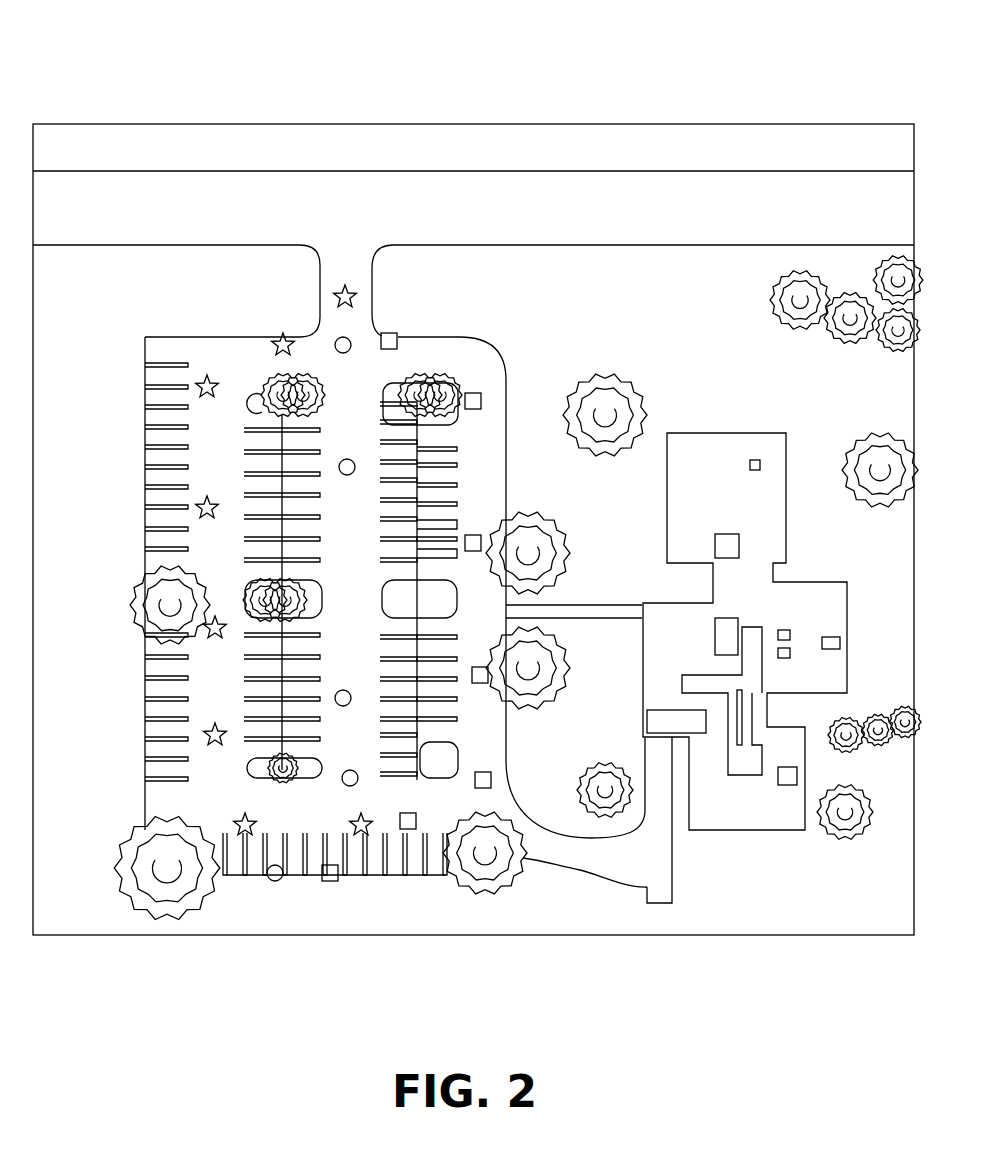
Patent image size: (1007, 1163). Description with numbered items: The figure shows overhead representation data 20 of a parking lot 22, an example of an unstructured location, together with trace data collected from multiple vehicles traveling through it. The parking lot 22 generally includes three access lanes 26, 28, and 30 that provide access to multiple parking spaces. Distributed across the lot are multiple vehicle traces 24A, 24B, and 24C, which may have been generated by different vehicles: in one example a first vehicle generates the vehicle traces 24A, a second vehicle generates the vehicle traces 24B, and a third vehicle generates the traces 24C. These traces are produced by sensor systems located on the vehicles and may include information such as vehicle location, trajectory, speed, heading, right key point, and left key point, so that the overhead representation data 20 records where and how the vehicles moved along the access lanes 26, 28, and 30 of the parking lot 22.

The overhead representation data 20 is at (802, 82).
The parking lot 22 is at (145, 565).
The vehicle traces 24A is at (368, 950).
The vehicle traces 24B is at (350, 338).
The vehicle traces 24C is at (398, 337).
The access lane 26 is at (216, 680).
The access lane 28 is at (354, 733).
The access lane 30 is at (482, 453).